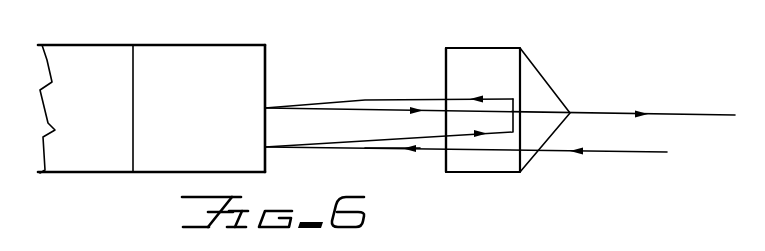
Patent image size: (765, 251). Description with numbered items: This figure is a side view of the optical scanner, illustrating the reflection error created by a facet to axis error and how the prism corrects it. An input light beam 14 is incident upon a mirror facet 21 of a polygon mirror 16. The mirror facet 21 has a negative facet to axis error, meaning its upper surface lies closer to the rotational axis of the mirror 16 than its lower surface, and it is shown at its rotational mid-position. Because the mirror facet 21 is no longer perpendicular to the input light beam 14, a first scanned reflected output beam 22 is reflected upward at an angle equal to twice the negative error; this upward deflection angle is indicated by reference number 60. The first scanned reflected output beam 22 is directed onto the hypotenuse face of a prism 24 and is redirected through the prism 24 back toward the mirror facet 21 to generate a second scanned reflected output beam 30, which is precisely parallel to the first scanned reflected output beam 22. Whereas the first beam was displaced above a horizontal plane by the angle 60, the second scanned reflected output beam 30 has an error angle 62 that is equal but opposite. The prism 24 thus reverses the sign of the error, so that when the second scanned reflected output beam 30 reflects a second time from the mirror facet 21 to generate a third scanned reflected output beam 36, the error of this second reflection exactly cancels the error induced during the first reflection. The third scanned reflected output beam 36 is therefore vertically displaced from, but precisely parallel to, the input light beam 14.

The polygon mirror 16 is at (100, 45).
The mirror facet 21 is at (266, 70).
The prism 24 is at (491, 48).
The second scanned reflected output beam 30 is at (445, 98).
The error angle 62 is at (365, 99).
The first scanned reflected output beam 22 is at (392, 138).
The third scanned reflected output beam 36 is at (640, 112).
The input light beam 14 is at (572, 153).
The upward deflection angle 60 is at (381, 142).